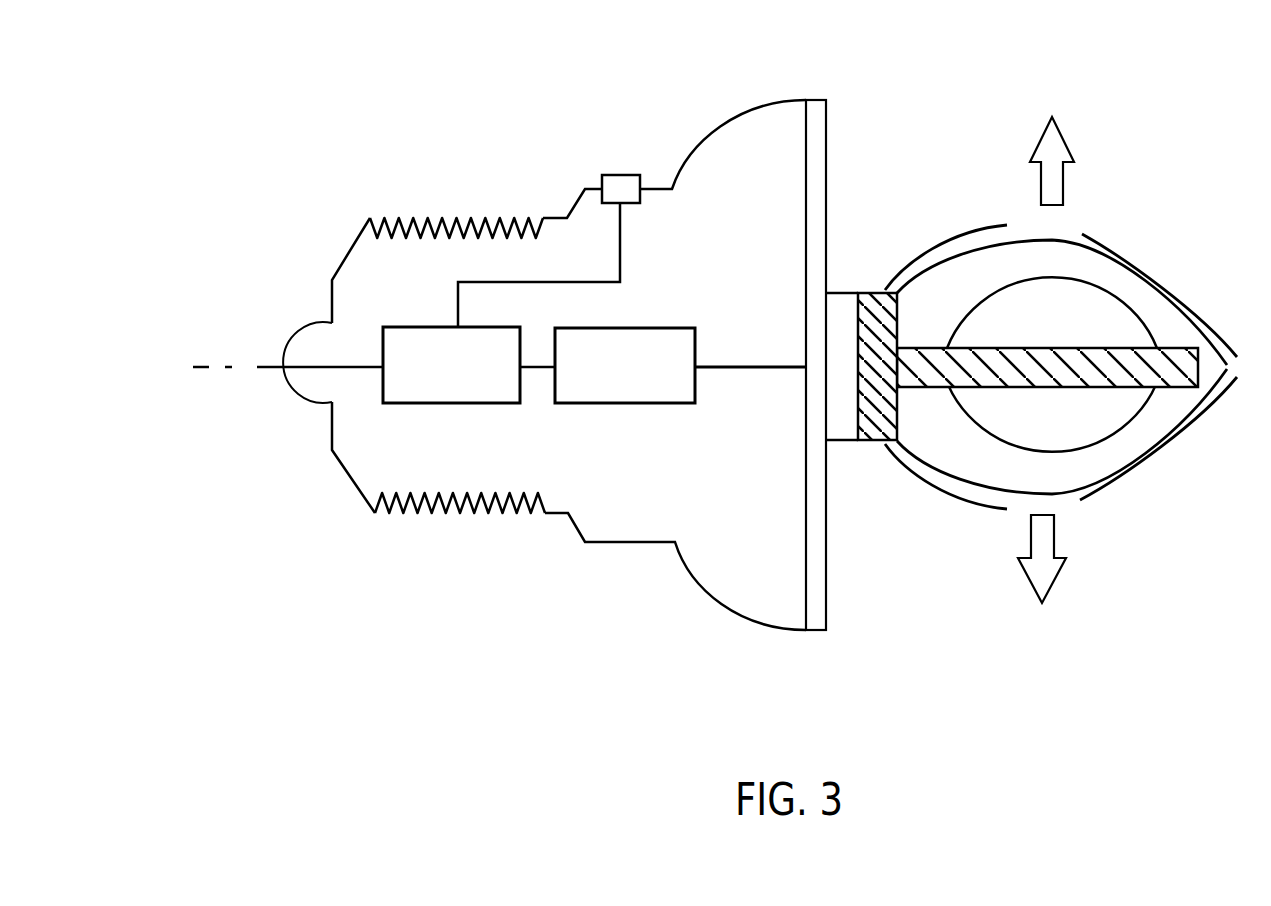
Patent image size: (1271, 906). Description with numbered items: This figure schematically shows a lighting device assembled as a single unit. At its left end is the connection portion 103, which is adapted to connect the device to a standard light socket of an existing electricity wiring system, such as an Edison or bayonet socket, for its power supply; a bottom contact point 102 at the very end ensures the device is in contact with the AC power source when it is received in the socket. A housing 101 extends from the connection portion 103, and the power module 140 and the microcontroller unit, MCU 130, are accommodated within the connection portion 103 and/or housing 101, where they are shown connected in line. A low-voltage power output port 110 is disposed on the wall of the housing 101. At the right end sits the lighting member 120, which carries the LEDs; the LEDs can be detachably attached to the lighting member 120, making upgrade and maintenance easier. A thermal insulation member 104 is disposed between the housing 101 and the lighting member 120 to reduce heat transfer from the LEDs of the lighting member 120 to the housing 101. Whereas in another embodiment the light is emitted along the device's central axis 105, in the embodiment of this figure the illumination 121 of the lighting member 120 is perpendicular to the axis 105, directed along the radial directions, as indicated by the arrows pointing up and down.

The housing 101 is at (615, 463).
The bottom contact point 102 is at (313, 387).
The connection portion 103 is at (475, 220).
The thermal insulation member 104 is at (833, 427).
The central axis 105 is at (757, 365).
The low-voltage power output port 110 is at (620, 175).
The lighting member 120 is at (1038, 433).
The illumination 121 is at (1046, 362).
The microcontroller unit (MCU) 130 is at (593, 327).
The power module 140 is at (438, 327).